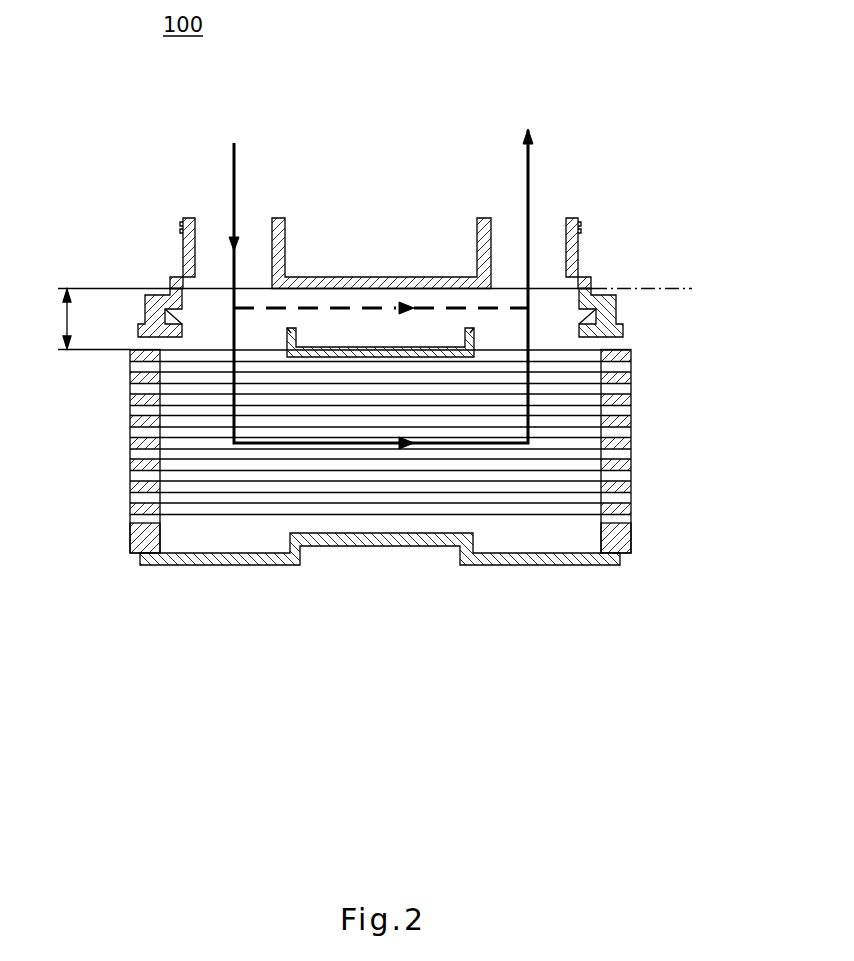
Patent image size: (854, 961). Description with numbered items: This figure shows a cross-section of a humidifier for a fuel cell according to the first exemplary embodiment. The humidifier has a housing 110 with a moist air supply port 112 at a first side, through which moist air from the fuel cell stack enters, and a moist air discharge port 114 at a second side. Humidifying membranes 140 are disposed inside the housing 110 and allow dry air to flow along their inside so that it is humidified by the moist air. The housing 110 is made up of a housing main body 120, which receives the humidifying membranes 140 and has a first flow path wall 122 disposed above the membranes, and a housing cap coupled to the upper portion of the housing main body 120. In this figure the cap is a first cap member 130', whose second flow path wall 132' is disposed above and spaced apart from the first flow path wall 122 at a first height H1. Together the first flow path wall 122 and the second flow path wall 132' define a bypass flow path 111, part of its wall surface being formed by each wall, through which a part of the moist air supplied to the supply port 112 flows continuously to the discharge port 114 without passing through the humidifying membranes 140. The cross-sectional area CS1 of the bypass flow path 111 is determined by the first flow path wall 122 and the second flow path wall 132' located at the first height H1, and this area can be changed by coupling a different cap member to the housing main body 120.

The housing 110 is at (599, 280).
The bypass flow path 111 is at (321, 302).
The moist air supply port 112 is at (262, 218).
The moist air discharge port 114 is at (553, 218).
The housing main body 120 is at (620, 329).
The first flow path wall 122 is at (360, 352).
The first cap member 130' is at (411, 225).
The second flow path wall 132' is at (381, 253).
The humidifying membranes 140 is at (192, 367).
The first height H1 is at (658, 291).
The cross-sectional area CS1 is at (76, 319).